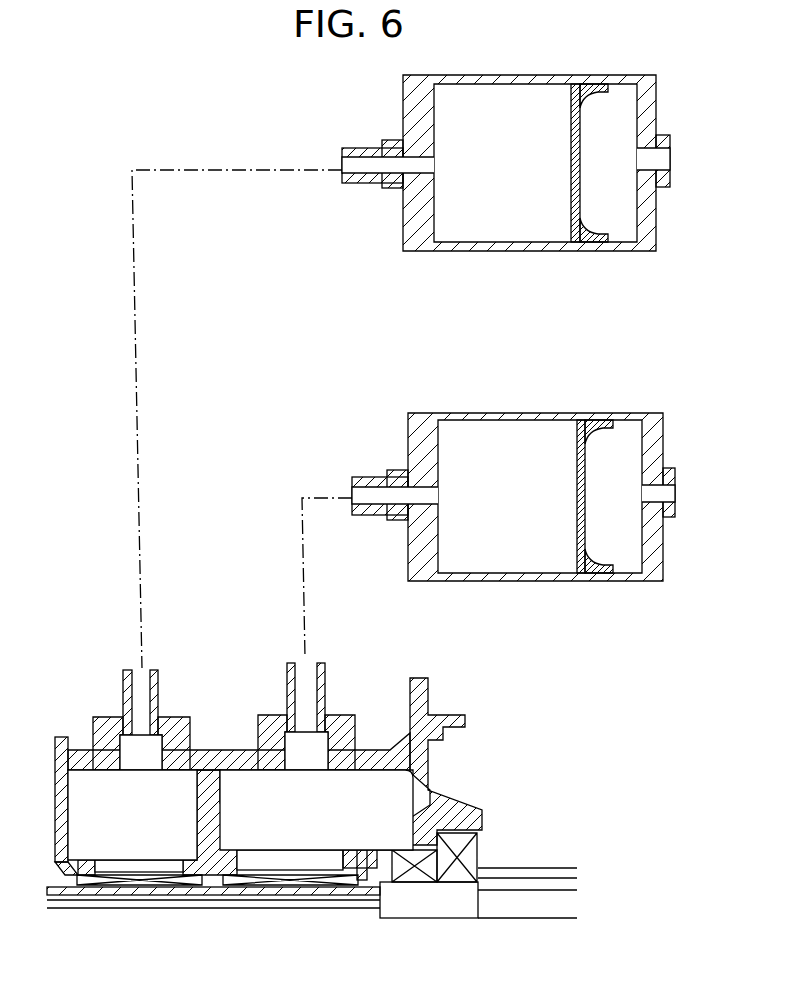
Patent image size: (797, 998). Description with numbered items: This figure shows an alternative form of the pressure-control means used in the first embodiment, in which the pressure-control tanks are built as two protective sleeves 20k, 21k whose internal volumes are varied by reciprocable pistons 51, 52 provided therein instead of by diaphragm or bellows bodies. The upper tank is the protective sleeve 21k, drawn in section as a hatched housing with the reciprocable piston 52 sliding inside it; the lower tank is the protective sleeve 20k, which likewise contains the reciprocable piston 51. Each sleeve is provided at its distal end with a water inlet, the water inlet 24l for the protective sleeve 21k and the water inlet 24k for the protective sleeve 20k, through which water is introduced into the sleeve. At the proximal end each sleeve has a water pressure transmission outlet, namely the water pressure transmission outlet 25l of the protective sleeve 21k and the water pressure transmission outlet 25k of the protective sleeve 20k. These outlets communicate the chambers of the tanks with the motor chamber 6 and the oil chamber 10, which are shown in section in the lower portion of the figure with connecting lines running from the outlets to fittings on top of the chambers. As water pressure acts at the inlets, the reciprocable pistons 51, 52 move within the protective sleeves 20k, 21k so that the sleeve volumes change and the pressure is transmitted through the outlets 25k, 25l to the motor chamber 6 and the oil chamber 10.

The reciprocable piston 52 is at (569, 112).
The reciprocable piston 51 is at (575, 457).
The water pressure transmission outlet 25l is at (363, 163).
The water pressure transmission outlet 25k is at (370, 497).
The water inlet 24l is at (660, 163).
The water inlet 24k is at (668, 500).
The protective sleeve 21k is at (482, 247).
The protective sleeve 20k is at (512, 581).
The oil chamber 10 is at (152, 836).
The motor chamber 6 is at (297, 826).